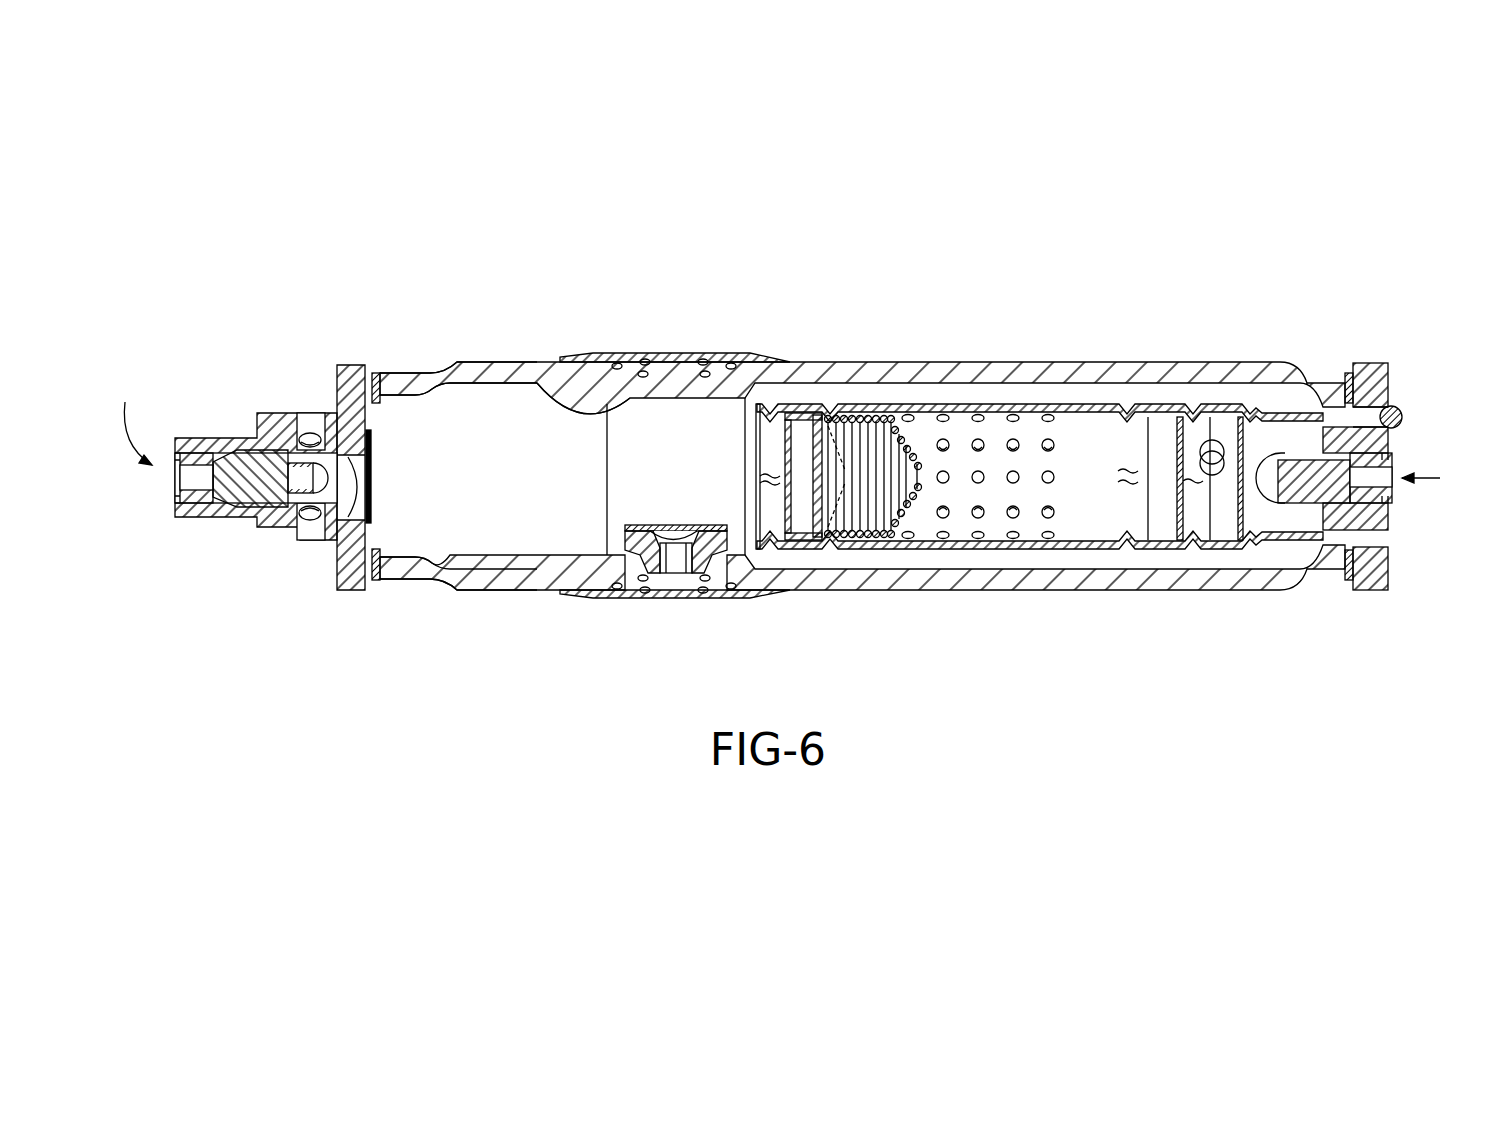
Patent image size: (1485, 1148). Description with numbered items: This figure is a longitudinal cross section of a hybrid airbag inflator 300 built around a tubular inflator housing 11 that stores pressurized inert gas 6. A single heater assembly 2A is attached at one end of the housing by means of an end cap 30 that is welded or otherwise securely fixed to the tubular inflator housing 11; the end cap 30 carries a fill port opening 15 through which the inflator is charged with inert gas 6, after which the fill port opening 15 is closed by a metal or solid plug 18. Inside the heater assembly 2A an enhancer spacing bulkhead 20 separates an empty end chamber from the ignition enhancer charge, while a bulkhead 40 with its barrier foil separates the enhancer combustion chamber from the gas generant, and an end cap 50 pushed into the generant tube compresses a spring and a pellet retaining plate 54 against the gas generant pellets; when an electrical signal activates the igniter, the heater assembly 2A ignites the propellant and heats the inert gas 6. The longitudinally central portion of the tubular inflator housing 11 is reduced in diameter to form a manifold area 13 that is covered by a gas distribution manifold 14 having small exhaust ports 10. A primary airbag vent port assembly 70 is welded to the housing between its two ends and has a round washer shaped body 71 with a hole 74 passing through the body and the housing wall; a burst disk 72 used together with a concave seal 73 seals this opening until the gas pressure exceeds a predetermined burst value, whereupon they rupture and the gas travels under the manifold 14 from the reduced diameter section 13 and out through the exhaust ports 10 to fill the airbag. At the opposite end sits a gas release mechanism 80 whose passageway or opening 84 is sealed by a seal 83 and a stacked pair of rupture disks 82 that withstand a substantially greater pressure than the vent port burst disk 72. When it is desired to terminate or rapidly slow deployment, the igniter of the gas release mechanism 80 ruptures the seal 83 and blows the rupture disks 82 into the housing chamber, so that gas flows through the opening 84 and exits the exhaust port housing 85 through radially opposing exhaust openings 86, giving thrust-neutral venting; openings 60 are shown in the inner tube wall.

The hybrid airbag inflator 300 is at (790, 457).
The gas release mechanism 80 is at (295, 446).
The exhaust openings 86 is at (310, 415).
The exhaust port end or housing 85 is at (290, 418).
The passageway or opening 84 is at (342, 485).
The seal 83 is at (353, 457).
The rupture disks 82 is at (372, 467).
The inert gas 6 is at (480, 405).
The manifold area 13 is at (622, 392).
The gas distribution manifold 14 is at (675, 315).
The exhaust ports 10 is at (733, 365).
The tubular inflator housing 11 is at (862, 448).
The end cap 50 is at (818, 457).
The pellet retaining plate 54 is at (890, 463).
The heater assembly 2A is at (1039, 464).
The bulkhead 40 is at (1143, 423).
The enhancer spacing bulkhead 20 is at (1250, 420).
The end cap 30 is at (1361, 450).
The fill port opening 15 is at (1367, 413).
The plug 18 is at (1397, 423).
The openings 60 is at (943, 512).
The primary airbag vent port assembly 70 is at (673, 590).
The round washer shaped body 71 is at (635, 538).
The burst disk 72 is at (667, 527).
The concave seal 73 is at (672, 540).
The hole 74 is at (685, 560).